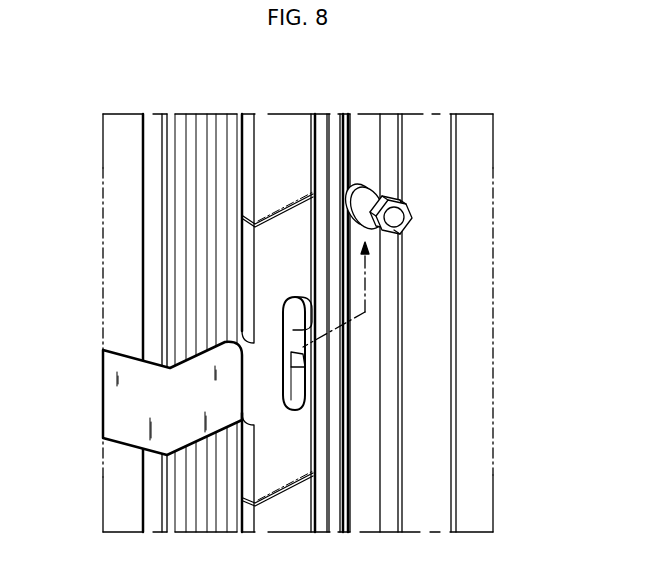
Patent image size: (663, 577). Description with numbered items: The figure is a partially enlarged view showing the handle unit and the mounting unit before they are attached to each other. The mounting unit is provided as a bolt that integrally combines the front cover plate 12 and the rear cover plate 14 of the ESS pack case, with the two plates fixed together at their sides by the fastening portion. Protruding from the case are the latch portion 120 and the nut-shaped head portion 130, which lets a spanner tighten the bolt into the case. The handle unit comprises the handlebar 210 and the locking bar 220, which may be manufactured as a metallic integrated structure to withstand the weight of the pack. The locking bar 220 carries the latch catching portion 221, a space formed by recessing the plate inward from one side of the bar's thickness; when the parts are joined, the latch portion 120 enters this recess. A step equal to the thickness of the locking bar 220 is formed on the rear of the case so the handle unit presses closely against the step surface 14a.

The front cover plate 12 is at (327, 138).
The rear cover plate 14 is at (468, 192).
The step surface 14a is at (365, 455).
The latch portion 120 is at (362, 200).
The head portion 130 is at (392, 193).
The handlebar 210 is at (127, 420).
The locking bar 220 is at (277, 142).
The latch catching portion 221 is at (300, 380).